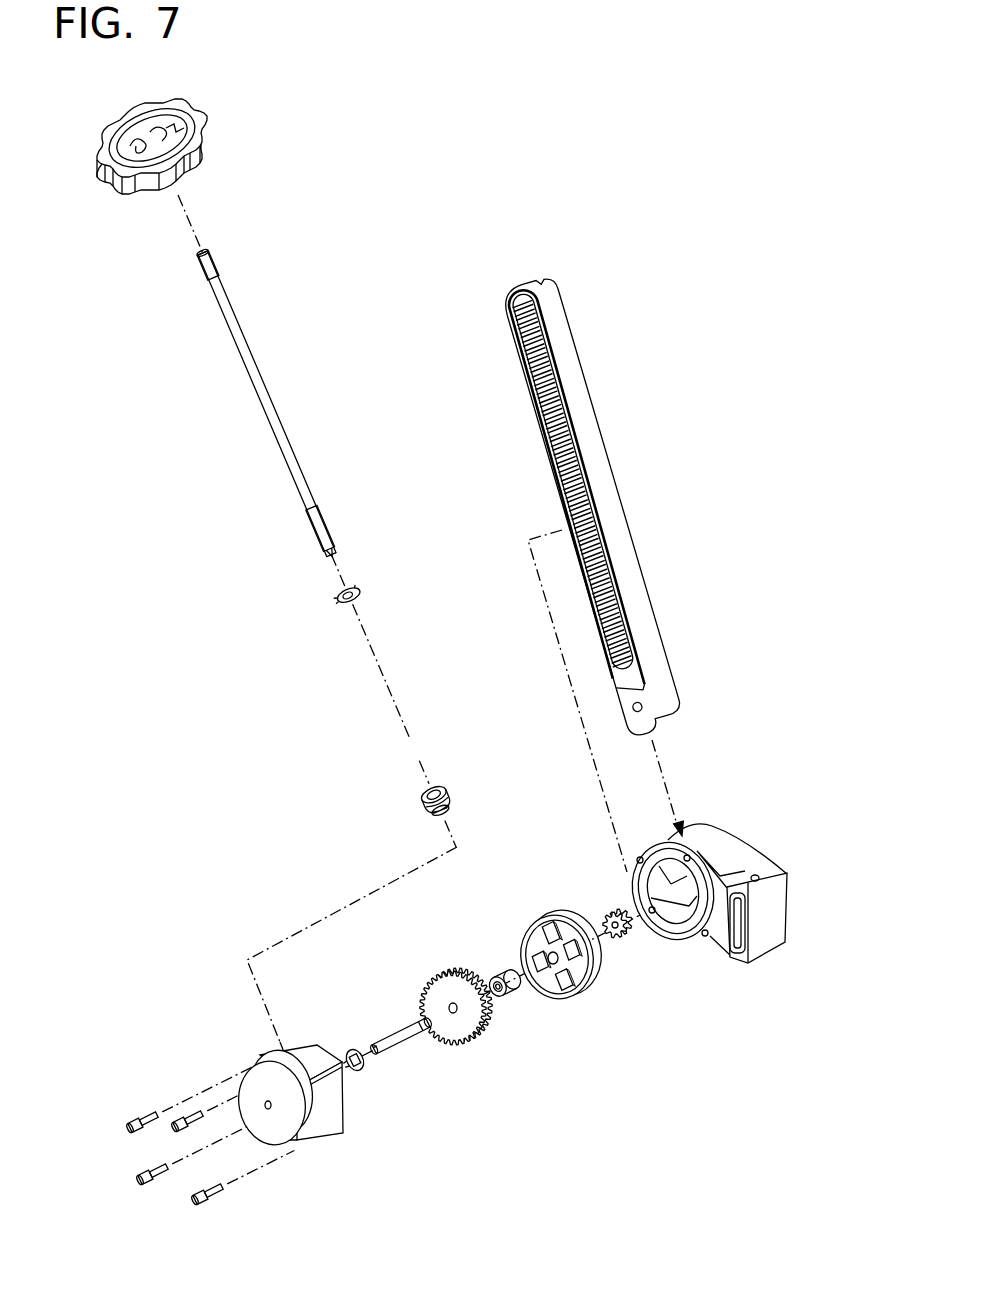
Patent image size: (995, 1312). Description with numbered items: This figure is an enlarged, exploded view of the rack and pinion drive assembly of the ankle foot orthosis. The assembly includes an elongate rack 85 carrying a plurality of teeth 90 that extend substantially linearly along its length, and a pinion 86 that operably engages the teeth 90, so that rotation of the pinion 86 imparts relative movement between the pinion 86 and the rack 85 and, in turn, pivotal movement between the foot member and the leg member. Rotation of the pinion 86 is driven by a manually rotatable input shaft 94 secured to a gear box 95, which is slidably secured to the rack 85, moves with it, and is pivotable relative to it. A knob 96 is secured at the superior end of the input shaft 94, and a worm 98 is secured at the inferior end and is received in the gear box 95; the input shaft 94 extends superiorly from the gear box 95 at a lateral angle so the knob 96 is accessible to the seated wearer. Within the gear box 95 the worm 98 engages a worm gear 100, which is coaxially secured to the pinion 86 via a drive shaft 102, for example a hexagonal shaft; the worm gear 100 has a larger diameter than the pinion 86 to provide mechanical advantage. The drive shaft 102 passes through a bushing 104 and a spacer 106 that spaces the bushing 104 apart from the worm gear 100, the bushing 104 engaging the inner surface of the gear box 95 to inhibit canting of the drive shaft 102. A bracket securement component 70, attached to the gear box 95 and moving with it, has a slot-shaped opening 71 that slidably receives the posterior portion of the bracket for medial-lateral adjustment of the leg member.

The bracket securement component 70 is at (715, 935).
The slot-shaped opening 71 is at (735, 975).
The rack 85 is at (559, 516).
The pinion 86 is at (623, 942).
The teeth 90 is at (548, 430).
The input shaft 94 is at (224, 345).
The gear box 95 is at (262, 1052).
The knob 96 is at (194, 115).
The worm 98 is at (448, 790).
The worm gear 100 is at (482, 1030).
The drive shaft 102 is at (392, 1030).
The bushing 104 is at (552, 908).
The spacer 106 is at (507, 972).